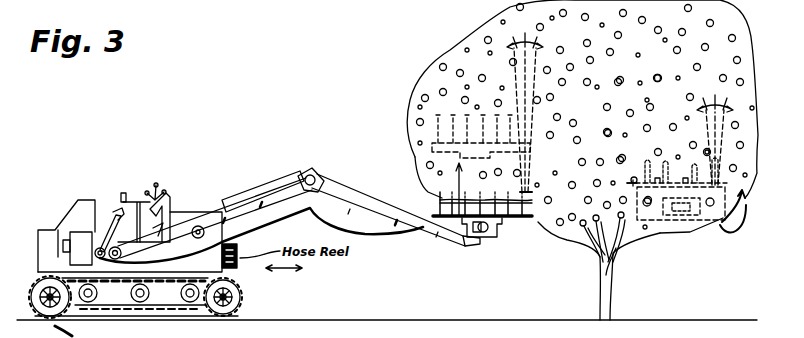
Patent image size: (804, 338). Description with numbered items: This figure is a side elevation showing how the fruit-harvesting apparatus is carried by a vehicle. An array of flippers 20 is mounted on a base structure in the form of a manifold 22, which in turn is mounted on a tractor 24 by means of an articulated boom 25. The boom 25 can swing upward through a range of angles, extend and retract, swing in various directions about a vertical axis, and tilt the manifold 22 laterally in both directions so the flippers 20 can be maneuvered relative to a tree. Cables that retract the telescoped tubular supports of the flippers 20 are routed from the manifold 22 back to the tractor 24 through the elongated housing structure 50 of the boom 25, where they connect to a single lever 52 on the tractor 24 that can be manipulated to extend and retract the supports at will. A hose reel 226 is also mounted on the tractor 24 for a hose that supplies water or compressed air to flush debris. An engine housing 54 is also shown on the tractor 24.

The flippers 20 is at (528, 152).
The manifold 22 is at (512, 223).
The tractor 24 is at (78, 220).
The articulated boom 25 is at (338, 186).
The elongated housing structure 50 is at (266, 202).
The lever 52 is at (107, 212).
The engine housing 54 is at (76, 236).
The reel 226 is at (240, 264).